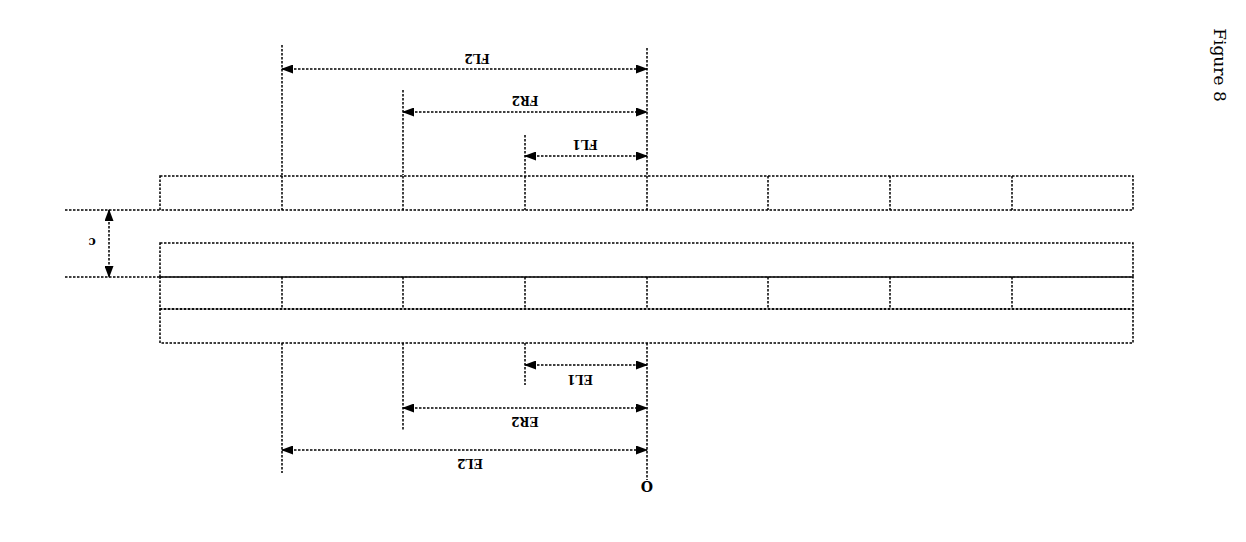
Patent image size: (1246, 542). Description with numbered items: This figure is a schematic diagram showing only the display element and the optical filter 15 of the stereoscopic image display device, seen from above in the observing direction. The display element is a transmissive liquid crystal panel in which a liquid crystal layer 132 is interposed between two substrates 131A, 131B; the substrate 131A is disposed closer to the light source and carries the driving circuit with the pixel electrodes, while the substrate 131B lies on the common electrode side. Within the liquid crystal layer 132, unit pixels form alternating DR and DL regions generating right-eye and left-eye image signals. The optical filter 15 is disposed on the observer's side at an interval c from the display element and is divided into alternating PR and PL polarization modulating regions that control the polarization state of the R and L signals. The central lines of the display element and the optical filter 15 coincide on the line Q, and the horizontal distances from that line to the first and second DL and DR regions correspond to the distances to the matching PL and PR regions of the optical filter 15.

The optical filter 15 is at (1052, 176).
The substrate 131B is at (1133, 252).
The liquid crystal layer 132 is at (1132, 302).
The substrate 131A is at (1087, 343).